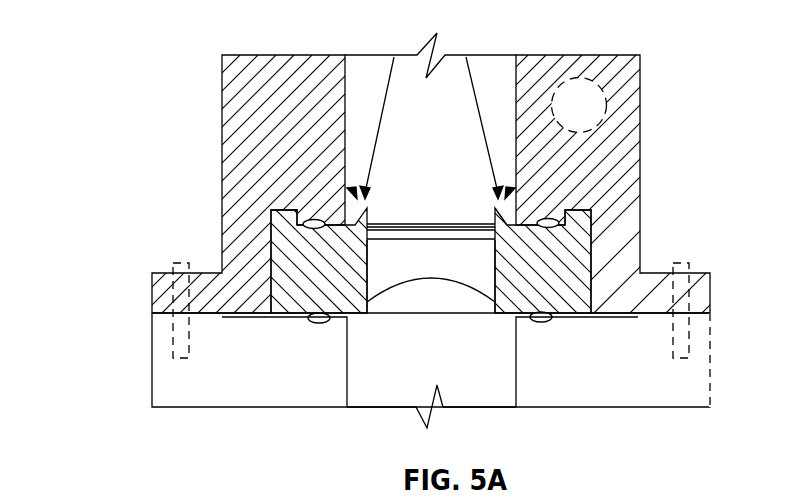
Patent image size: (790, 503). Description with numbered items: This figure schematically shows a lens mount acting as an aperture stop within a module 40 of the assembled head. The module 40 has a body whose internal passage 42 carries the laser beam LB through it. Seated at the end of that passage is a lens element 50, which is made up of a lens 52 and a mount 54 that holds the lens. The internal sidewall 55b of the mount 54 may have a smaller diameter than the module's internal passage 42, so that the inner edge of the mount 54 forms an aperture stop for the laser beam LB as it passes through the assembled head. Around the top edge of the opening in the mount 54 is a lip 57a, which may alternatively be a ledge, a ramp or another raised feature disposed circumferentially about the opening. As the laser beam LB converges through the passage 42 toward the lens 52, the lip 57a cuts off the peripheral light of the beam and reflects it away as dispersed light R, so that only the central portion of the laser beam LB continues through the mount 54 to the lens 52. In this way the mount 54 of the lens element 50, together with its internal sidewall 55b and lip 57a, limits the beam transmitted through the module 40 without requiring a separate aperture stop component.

The module 40 is at (128, 33).
The internal passage 42 is at (347, 68).
The laser beam LB is at (483, 140).
The mount 54 is at (593, 268).
The lip 57a is at (367, 222).
The dispersed light R is at (505, 208).
The lens 52 is at (453, 267).
The internal sidewall 55b is at (367, 302).
The lens element 50 is at (382, 388).